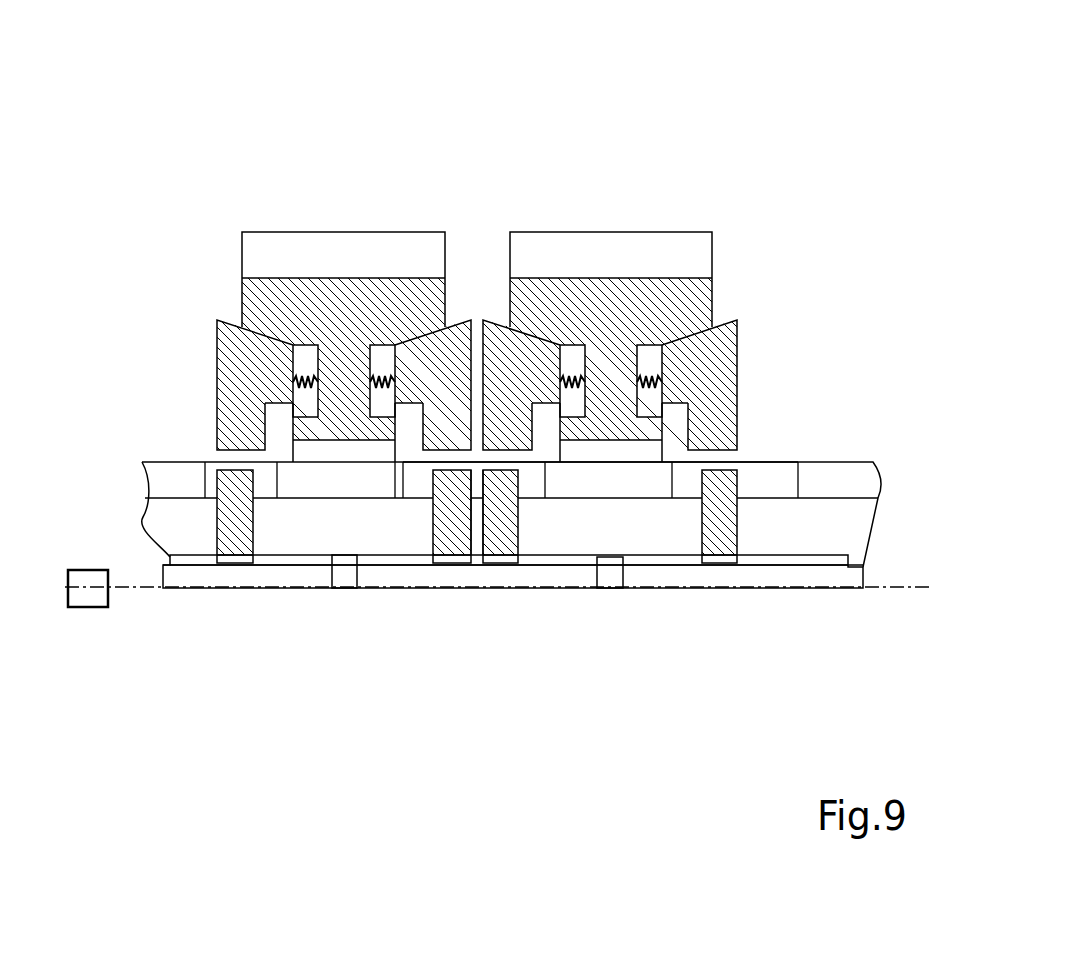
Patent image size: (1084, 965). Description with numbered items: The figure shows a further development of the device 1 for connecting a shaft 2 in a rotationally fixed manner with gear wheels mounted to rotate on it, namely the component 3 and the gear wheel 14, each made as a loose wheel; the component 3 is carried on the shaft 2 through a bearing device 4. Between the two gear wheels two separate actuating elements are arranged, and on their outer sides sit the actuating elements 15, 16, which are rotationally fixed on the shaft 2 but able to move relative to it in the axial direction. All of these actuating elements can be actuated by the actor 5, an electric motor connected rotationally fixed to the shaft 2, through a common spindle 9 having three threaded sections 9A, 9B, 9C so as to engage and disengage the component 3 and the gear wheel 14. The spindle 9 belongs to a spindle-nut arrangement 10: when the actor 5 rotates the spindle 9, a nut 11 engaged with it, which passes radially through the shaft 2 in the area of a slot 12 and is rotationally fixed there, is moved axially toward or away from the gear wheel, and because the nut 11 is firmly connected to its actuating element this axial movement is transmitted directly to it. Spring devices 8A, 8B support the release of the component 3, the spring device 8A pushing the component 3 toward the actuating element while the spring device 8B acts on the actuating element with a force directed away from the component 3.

The device 1 is at (405, 107).
The shaft 2 is at (183, 472).
The component 3 is at (257, 255).
The bearing device 4 is at (342, 448).
The actor 5 is at (93, 577).
The spring device 8A is at (298, 388).
The spring device 8B is at (378, 388).
The spindle 9 is at (185, 598).
The threaded section 9A is at (143, 460).
The threaded section 9B is at (408, 562).
The threaded section 9C is at (678, 562).
The spindle-nut arrangement 10 is at (480, 588).
The nut 11 is at (458, 478).
The slot 12 is at (420, 485).
The gear wheel 14 is at (642, 250).
The actuating element 15 is at (238, 345).
The actuating element 16 is at (718, 343).